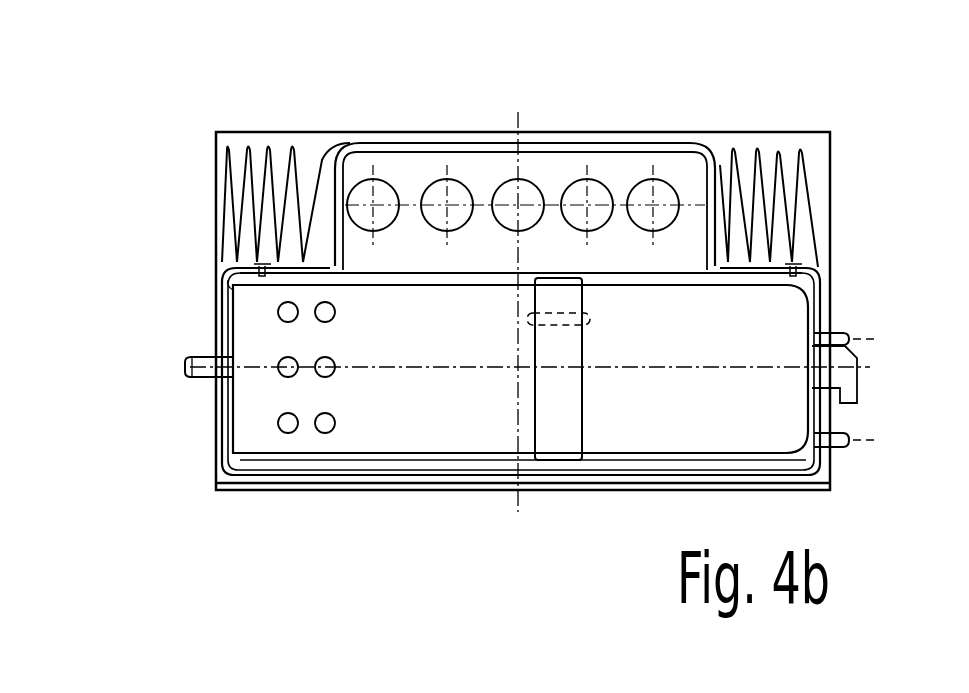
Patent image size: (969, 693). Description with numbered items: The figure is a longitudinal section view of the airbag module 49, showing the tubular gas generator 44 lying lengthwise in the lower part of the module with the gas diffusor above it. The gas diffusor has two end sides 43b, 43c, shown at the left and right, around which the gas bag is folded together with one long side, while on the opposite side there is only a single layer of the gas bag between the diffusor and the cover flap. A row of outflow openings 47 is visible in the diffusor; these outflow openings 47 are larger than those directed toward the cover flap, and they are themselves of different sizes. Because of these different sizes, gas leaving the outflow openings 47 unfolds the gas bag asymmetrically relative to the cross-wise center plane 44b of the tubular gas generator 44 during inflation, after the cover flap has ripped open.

The outflow openings 47 is at (440, 200).
The cross-wise center plane 44b is at (510, 136).
The end side of the gas diffusor 43c is at (708, 203).
The end side of the gas diffusor 43b is at (333, 187).
The airbag module 49 is at (190, 312).
The tubular gas generator 44 is at (267, 412).